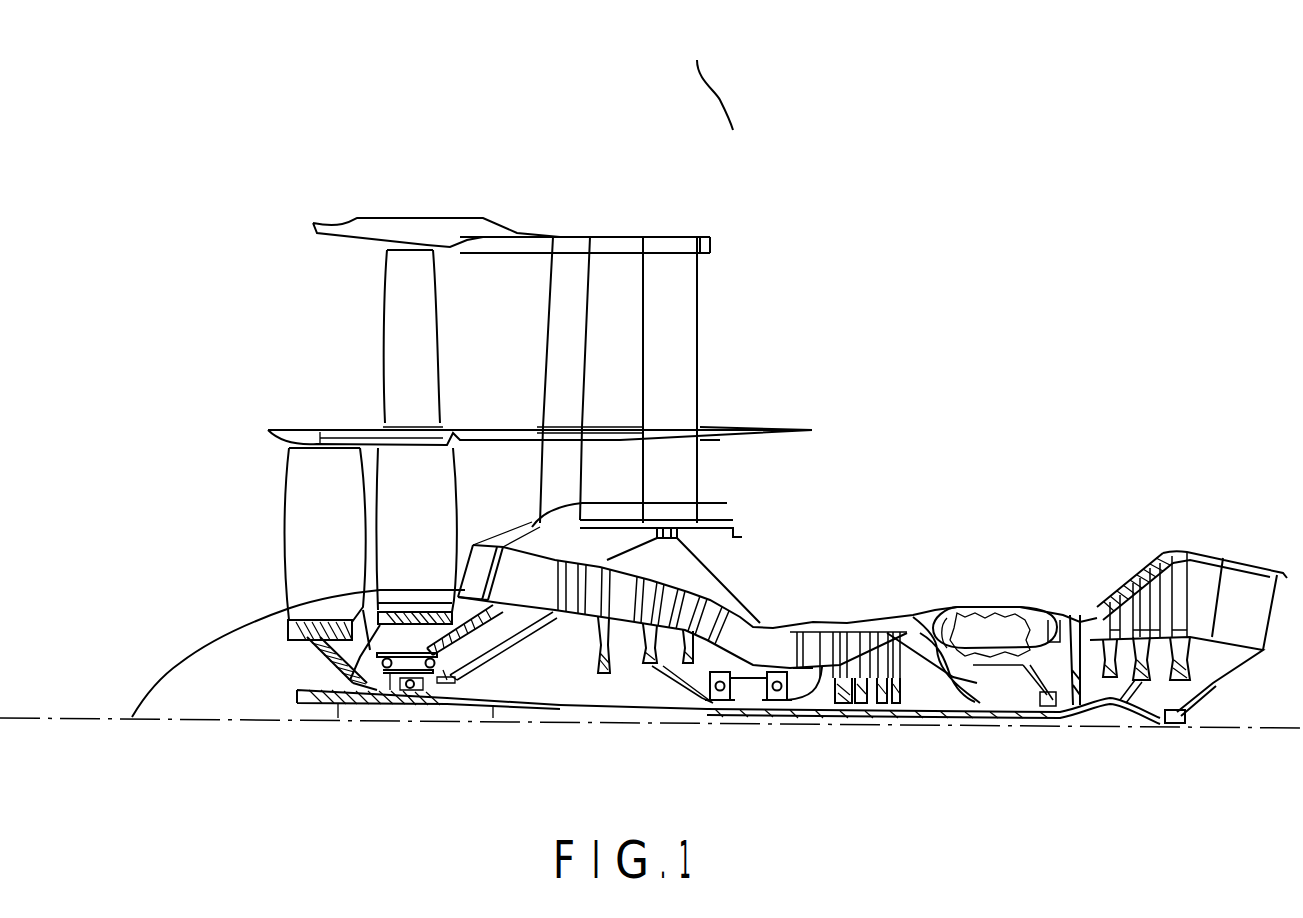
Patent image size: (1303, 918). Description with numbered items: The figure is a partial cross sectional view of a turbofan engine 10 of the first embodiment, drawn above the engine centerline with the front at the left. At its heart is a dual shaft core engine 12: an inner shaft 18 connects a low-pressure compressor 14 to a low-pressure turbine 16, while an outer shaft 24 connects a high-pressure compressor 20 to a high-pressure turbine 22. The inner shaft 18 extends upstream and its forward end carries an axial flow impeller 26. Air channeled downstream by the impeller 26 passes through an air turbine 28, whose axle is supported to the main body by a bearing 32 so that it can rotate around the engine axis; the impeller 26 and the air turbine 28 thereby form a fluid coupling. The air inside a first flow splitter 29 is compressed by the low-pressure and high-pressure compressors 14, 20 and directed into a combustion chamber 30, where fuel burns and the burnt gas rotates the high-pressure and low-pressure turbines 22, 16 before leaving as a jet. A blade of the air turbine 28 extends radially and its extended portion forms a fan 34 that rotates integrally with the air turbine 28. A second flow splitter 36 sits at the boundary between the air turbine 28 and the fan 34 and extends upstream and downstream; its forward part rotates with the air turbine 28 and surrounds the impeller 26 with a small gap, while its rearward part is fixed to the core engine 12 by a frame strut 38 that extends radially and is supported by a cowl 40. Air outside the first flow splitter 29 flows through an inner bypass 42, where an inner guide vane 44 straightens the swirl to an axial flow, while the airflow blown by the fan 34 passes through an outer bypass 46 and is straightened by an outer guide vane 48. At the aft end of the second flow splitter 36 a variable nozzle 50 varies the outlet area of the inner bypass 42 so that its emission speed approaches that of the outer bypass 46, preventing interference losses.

The turbofan engine 10 is at (737, 122).
The core engine 12 is at (872, 610).
The low-pressure compressor 14 is at (583, 597).
The low-pressure turbine 16 is at (1143, 587).
The inner shaft 18 is at (770, 718).
The high-pressure compressor 20 is at (857, 632).
The high-pressure turbine 22 is at (1082, 620).
The outer shaft 24 is at (938, 615).
The impeller 26 is at (300, 518).
The air turbine 28 is at (437, 510).
The first flow splitter 29 is at (740, 500).
The combustion chamber 30 is at (1025, 618).
The bearing 32 is at (393, 703).
The fan 34 is at (430, 377).
The second flow splitter 36 is at (300, 427).
The frame strut 38 is at (693, 305).
The cowl 40 is at (450, 218).
The inner bypass 42 is at (631, 500).
The inner guide vane 44 is at (545, 472).
The outer bypass 46 is at (631, 298).
The outer guide vane 48 is at (550, 312).
The variable nozzle 50 is at (737, 427).